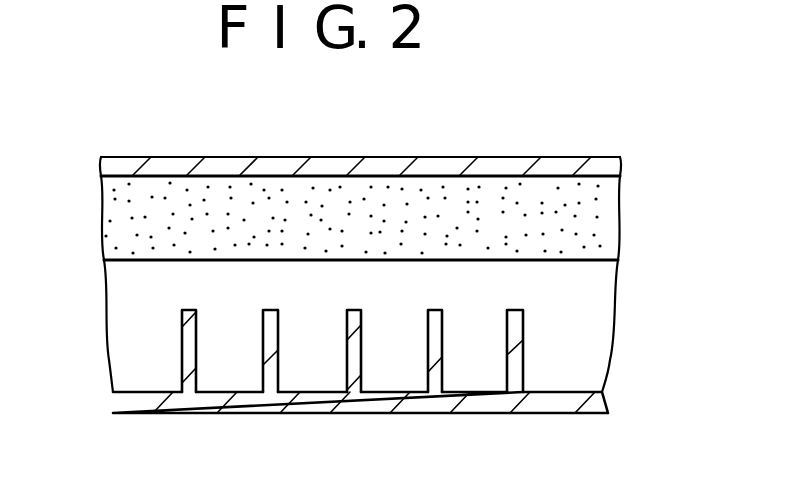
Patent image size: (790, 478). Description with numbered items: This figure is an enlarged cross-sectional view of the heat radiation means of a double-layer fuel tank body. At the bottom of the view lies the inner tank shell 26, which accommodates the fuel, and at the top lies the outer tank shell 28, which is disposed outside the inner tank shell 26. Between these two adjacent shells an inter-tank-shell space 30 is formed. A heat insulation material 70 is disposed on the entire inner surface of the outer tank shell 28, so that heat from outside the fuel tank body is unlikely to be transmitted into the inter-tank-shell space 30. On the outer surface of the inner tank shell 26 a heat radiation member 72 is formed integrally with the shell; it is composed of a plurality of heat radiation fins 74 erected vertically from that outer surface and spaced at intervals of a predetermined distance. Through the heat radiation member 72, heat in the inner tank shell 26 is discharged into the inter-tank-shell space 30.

The inner tank shell 26 is at (553, 405).
The outer tank shell 28 is at (270, 168).
The inter-tank-shell space 30 is at (560, 290).
The heat insulation material 70 is at (120, 213).
The heat radiation member 72 is at (142, 322).
The heat radiation fins 74 is at (263, 310).